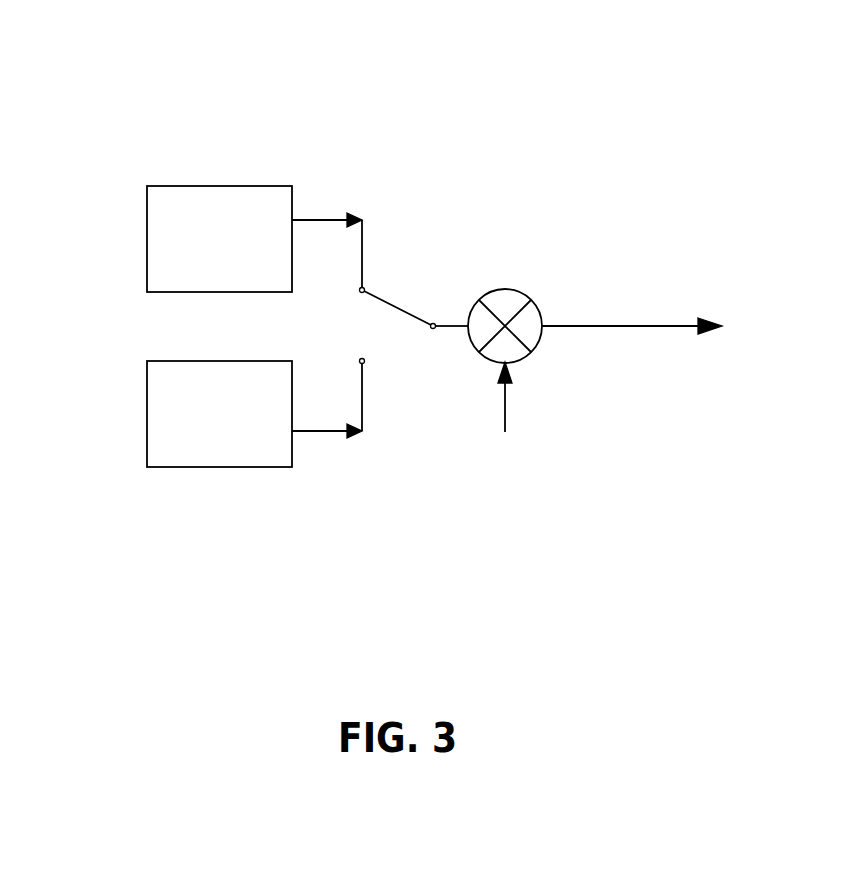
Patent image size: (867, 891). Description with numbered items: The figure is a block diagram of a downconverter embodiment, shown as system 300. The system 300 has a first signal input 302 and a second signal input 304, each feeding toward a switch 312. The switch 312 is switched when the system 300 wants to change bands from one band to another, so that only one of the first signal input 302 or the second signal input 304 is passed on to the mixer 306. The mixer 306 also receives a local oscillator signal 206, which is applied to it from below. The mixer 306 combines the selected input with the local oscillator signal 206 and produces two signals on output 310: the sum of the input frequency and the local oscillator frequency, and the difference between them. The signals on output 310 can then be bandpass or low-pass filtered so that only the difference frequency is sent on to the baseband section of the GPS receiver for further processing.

The system 300 is at (425, 115).
The first signal input 302 is at (147, 212).
The second signal input 304 is at (147, 423).
The switch 312 is at (390, 298).
The mixer 306 is at (493, 292).
The output 310 is at (615, 325).
The local oscillator signal 206 is at (507, 397).